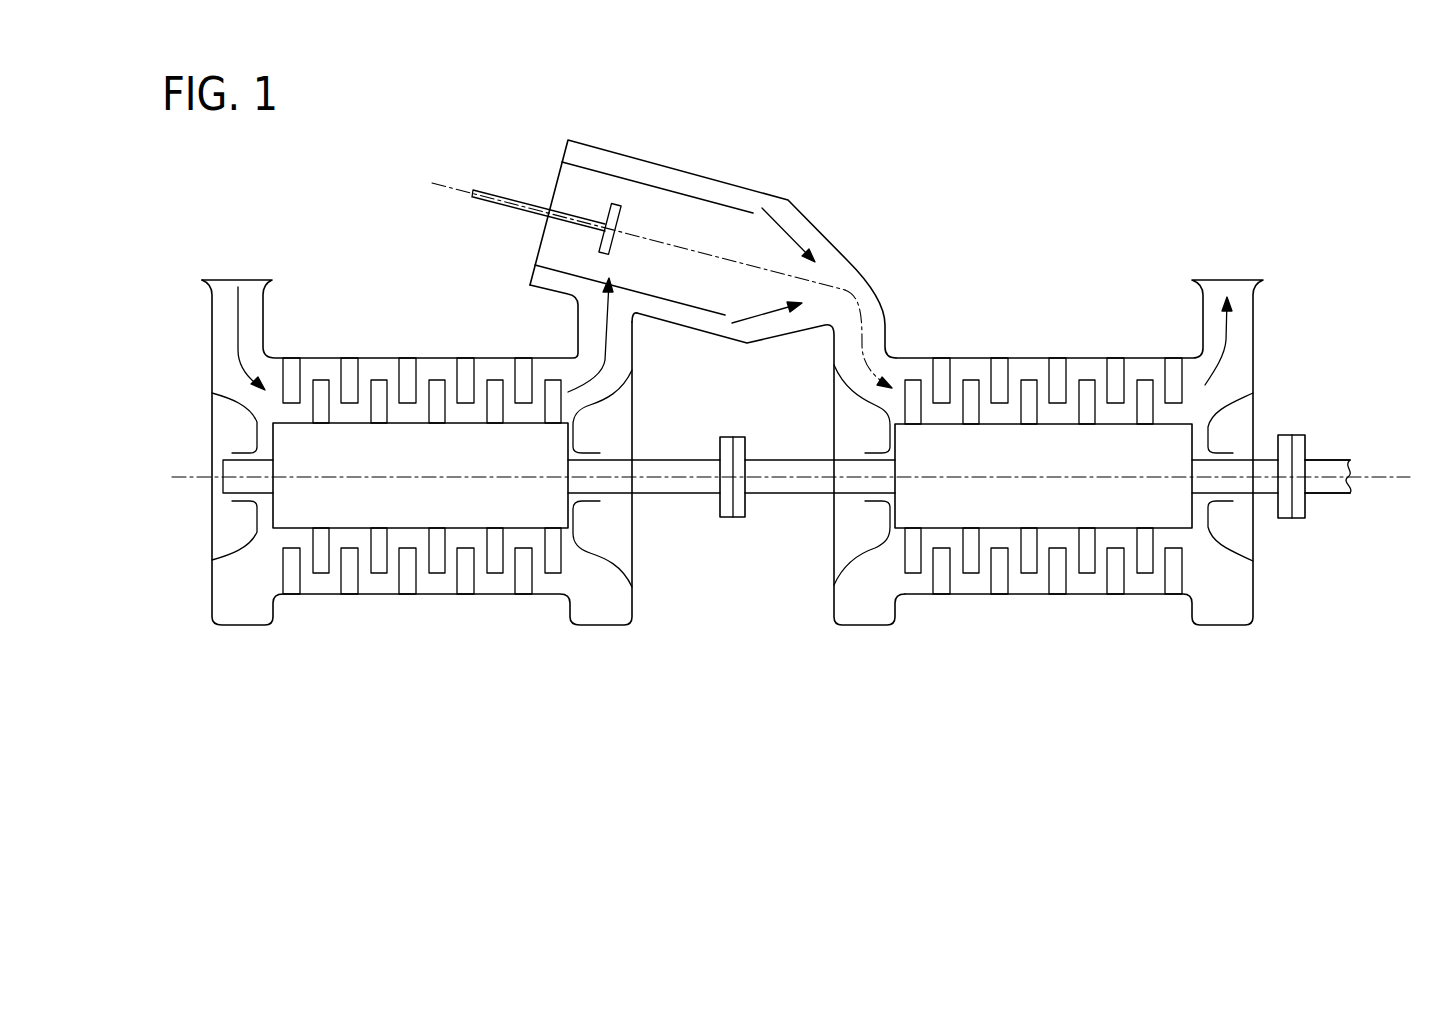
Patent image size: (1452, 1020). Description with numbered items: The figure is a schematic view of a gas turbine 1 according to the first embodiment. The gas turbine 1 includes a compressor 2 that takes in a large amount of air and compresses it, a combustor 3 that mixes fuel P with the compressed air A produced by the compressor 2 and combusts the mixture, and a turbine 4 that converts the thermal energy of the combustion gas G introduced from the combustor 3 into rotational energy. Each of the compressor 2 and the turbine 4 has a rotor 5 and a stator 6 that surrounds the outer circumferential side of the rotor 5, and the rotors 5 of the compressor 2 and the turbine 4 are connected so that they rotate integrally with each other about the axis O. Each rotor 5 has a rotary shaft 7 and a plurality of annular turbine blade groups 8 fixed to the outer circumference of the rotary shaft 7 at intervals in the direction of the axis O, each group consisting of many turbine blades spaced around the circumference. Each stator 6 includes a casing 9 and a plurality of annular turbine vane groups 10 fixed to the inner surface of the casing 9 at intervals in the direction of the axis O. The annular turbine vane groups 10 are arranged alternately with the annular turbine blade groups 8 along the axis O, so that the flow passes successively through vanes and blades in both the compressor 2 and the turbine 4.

The gas turbine 1 is at (972, 80).
The compressor 2 is at (460, 506).
The combustor 3 is at (668, 347).
The turbine 4 is at (1079, 486).
The rotor 5 is at (269, 550).
The stator 6 is at (578, 605).
The rotary shaft 7 is at (395, 500).
The annular turbine blade group 8 is at (968, 387).
The casing 9 is at (1041, 600).
The annular turbine vane group 10 is at (942, 362).
The compressed air A is at (603, 335).
The combustion gas G is at (847, 290).
The fuel P is at (432, 183).
The axis O is at (1383, 477).